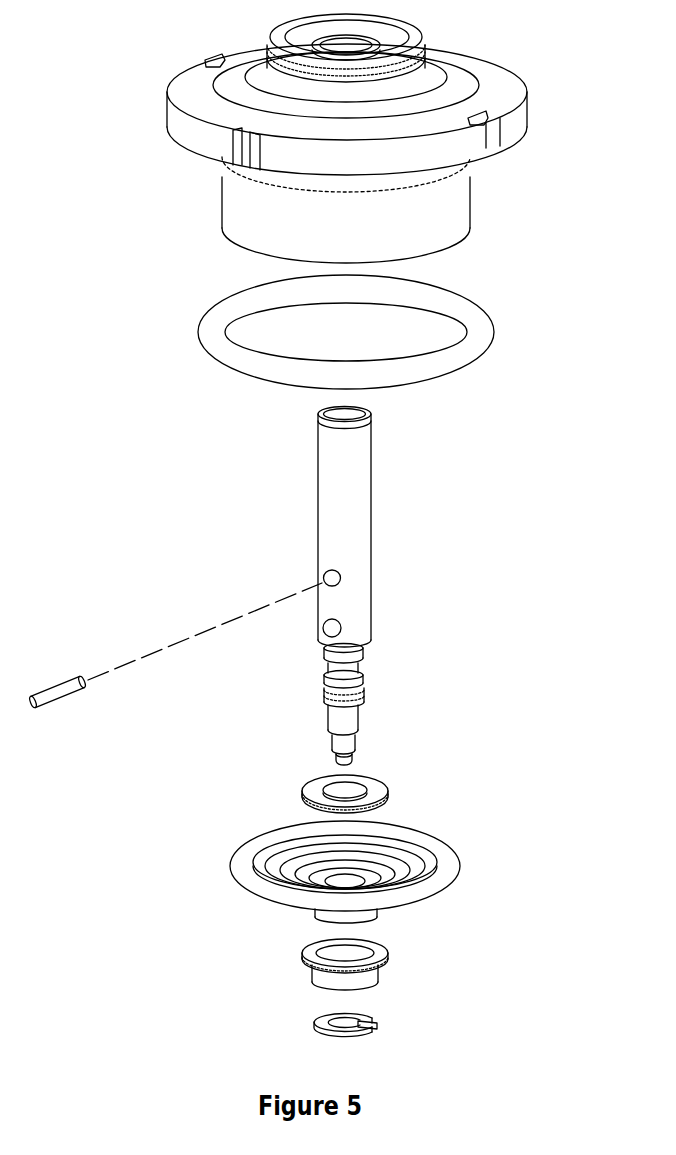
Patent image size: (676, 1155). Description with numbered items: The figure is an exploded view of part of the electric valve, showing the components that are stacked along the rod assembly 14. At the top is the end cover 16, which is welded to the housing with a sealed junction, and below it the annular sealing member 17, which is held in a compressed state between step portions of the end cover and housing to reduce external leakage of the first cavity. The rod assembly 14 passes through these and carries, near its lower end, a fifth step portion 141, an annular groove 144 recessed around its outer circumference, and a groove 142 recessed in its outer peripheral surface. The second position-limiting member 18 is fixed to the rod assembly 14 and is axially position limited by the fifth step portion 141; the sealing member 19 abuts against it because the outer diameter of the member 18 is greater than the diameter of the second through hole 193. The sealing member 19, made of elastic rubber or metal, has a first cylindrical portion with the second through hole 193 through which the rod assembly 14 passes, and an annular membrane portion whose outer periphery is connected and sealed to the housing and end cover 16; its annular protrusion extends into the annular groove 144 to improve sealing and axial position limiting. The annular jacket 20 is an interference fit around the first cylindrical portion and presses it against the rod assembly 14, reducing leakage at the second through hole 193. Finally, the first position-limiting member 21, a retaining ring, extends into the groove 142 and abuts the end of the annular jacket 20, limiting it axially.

The end cover 16 is at (463, 213).
The annular sealing member 17 is at (490, 325).
The rod assembly 14 is at (357, 528).
The fifth step portion 141 is at (365, 660).
The annular groove 144 is at (360, 668).
The groove 142 is at (362, 690).
The second position-limiting member 18 is at (383, 787).
The second through hole 193 is at (342, 882).
The sealing member 19 is at (443, 865).
The annular jacket 20 is at (378, 972).
The first position-limiting member 21 is at (370, 1018).